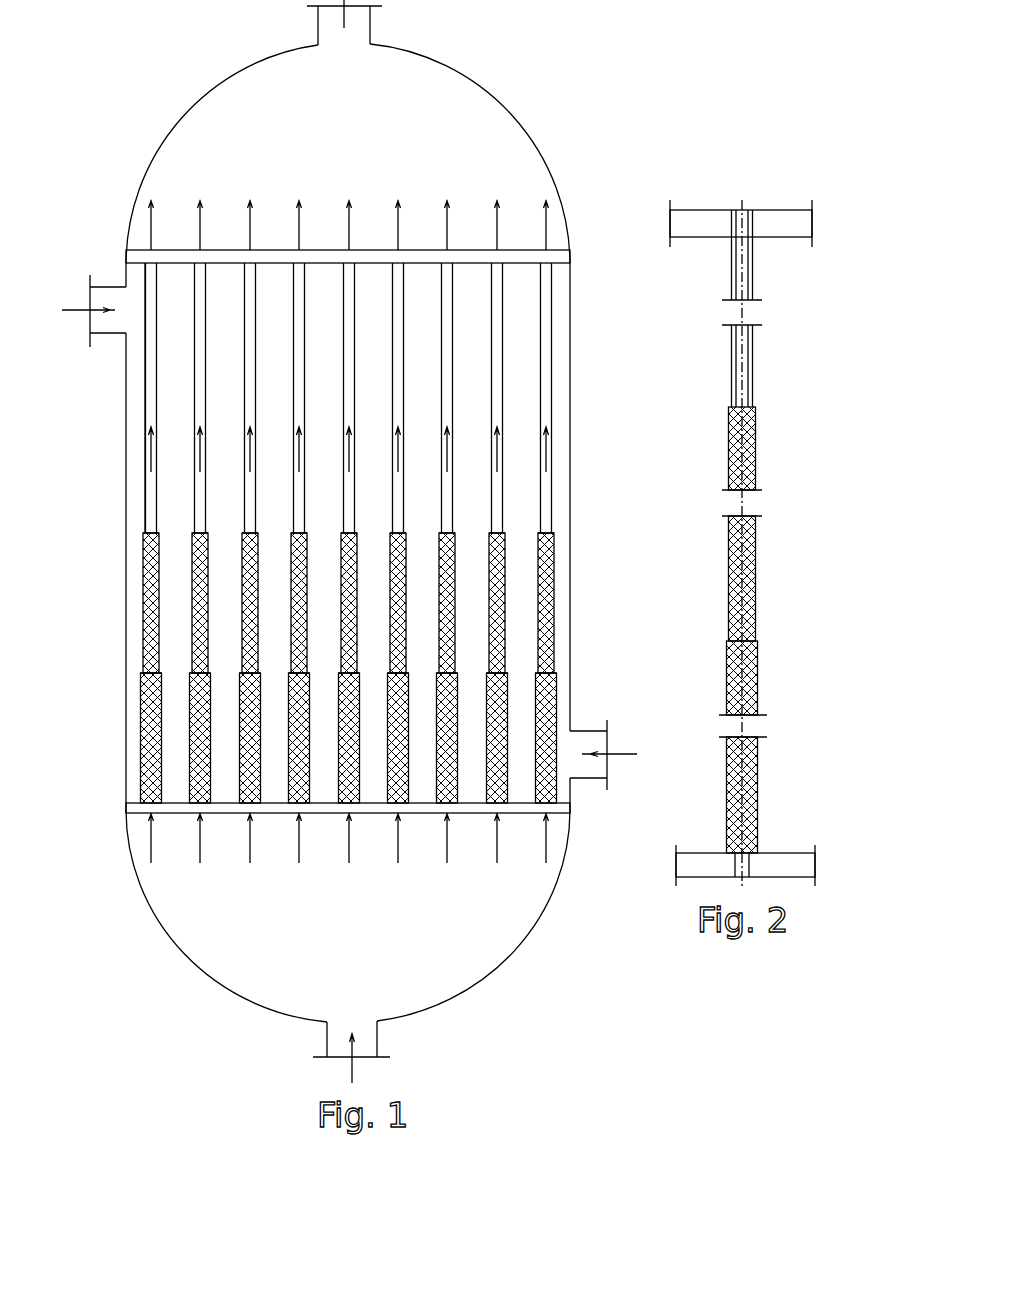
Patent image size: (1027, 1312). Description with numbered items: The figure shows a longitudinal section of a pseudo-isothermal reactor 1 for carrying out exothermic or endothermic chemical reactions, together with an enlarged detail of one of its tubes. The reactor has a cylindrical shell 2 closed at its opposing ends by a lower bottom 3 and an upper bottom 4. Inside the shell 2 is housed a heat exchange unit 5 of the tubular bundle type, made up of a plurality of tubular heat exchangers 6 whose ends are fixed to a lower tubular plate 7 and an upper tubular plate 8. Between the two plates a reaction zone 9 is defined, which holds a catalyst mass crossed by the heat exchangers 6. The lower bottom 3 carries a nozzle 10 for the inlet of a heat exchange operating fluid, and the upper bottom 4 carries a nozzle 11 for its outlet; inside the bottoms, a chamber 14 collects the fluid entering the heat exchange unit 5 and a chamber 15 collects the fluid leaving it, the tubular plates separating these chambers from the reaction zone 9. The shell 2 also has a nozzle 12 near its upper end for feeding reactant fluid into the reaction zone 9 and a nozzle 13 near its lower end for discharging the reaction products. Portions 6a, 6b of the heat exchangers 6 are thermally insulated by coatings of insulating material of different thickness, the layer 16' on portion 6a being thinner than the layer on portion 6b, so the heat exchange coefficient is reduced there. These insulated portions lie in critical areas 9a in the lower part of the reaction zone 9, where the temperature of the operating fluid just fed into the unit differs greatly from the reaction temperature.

In FIG. 1, the pseudo-isothermal reactor 1 is at (596, 72).
In FIG. 1, the cylindrical shell 2 is at (126, 436).
In FIG. 1, the lower bottom 3 is at (535, 950).
In FIG. 1, the upper bottom 4 is at (488, 86).
In FIG. 1, the heat exchange unit 5 is at (138, 390).
In FIG. 1, the tubular heat exchanger 6 is at (150, 504).
In FIG. 2, the tubular heat exchanger 6 is at (778, 377).
In FIG. 1, the exchanger portion 6a is at (136, 622).
In FIG. 2, the exchanger portion 6a is at (770, 583).
In FIG. 1, the exchanger portion 6b is at (187, 724).
In FIG. 2, the exchanger portion 6b is at (770, 798).
In FIG. 1, the lower tubular plate 7 is at (136, 810).
In FIG. 2, the lower tubular plate 7 is at (690, 868).
In FIG. 1, the upper tubular plate 8 is at (562, 258).
In FIG. 2, the upper tubular plate 8 is at (683, 222).
In FIG. 1, the reaction zone 9 is at (510, 344).
In FIG. 1, the critical area 9a is at (517, 605).
In FIG. 1, the nozzle 10 is at (378, 1042).
In FIG. 1, the nozzle 11 is at (372, 22).
In FIG. 1, the nozzle 12 is at (103, 285).
In FIG. 1, the nozzle 13 is at (597, 731).
In FIG. 1, the chamber 14 is at (365, 962).
In FIG. 1, the chamber 15 is at (363, 112).
In FIG. 1, the layer of insulating material 16' is at (303, 601).
In FIG. 2, the layer of insulating material 16' is at (789, 461).